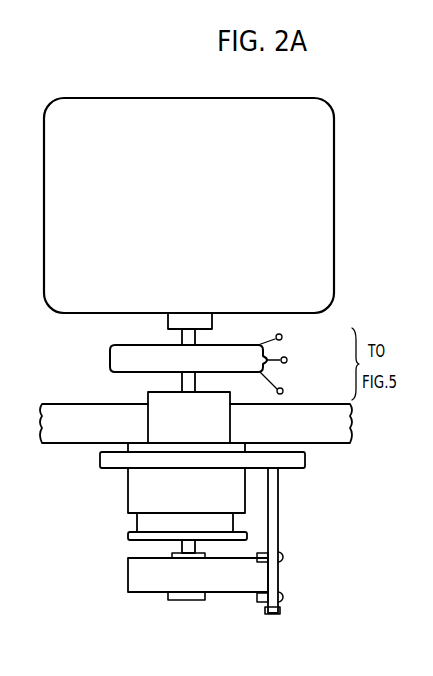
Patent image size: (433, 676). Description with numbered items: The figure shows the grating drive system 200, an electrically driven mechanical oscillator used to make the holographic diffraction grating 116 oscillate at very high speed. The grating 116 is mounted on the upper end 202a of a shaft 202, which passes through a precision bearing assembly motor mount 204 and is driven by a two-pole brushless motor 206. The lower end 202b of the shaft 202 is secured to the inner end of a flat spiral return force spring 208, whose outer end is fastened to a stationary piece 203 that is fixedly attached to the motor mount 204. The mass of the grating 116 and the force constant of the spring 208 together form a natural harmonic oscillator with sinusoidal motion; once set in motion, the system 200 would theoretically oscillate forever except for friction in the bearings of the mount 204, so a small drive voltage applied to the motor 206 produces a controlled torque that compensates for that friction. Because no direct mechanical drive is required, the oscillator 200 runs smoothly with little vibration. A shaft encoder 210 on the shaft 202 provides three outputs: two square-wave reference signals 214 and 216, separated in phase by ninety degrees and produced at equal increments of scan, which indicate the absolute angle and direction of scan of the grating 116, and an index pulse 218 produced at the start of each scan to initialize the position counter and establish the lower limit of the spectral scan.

The holographic diffraction grating 116 is at (97, 97).
The grating drive system 200 is at (70, 452).
The shaft 202 is at (178, 378).
The upper end of shaft 202a is at (178, 336).
The lower end of shaft 202b is at (175, 545).
The stationary piece 203 is at (281, 524).
The precision bearing assembly motor mount 204 is at (128, 490).
The 2-pole brushless motor 206 is at (137, 520).
The flat spiral return force spring 208 is at (127, 578).
The shaft encoder 210 is at (110, 355).
The phase 1 reference signal 214 is at (275, 336).
The phase 2 reference signal 216 is at (263, 359).
The index pulse 218 is at (276, 391).